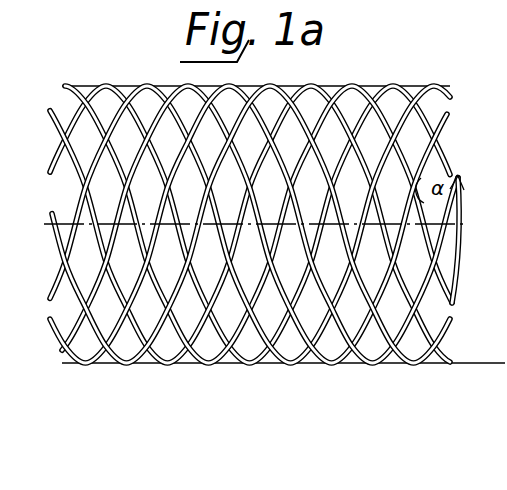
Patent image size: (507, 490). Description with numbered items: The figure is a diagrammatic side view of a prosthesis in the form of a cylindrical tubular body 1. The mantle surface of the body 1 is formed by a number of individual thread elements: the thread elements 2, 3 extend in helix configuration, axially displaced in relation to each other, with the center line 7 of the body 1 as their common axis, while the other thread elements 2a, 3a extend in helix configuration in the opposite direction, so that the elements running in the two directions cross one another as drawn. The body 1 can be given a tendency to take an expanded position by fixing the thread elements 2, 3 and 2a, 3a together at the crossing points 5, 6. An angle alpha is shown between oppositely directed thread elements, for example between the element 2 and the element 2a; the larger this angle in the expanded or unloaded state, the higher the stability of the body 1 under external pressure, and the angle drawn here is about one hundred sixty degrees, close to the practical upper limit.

The cylindrical tubular body 1 is at (140, 364).
The thread element 2 is at (138, 93).
The thread element 2a is at (50, 110).
The thread element 3 is at (180, 91).
The thread element 3a is at (68, 88).
The crossing point 5 is at (277, 132).
The crossing point 6 is at (312, 137).
The center line 7 is at (57, 223).